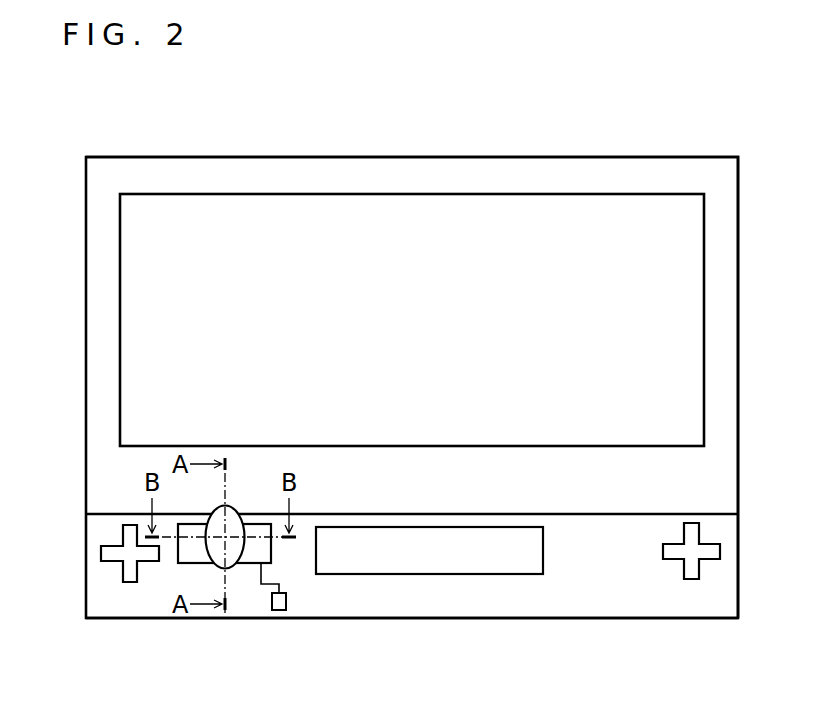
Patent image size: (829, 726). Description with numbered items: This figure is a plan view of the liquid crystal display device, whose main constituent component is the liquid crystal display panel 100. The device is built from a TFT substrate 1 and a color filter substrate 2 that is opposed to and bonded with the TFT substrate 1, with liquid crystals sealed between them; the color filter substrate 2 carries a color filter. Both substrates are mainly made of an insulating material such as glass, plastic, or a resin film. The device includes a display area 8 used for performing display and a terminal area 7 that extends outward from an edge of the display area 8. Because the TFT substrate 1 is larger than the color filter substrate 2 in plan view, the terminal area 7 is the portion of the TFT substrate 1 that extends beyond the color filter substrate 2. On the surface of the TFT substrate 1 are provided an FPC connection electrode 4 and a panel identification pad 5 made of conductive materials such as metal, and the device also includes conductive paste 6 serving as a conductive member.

The liquid crystal display panel 100 is at (350, 153).
The TFT substrate 1 is at (442, 619).
The color filter substrate 2 is at (676, 157).
The display area 8 is at (608, 214).
The terminal area 7 is at (105, 597).
The panel identification pad 5 is at (246, 564).
The conductive paste 6 is at (232, 507).
The FPC connection electrode 4 is at (280, 611).